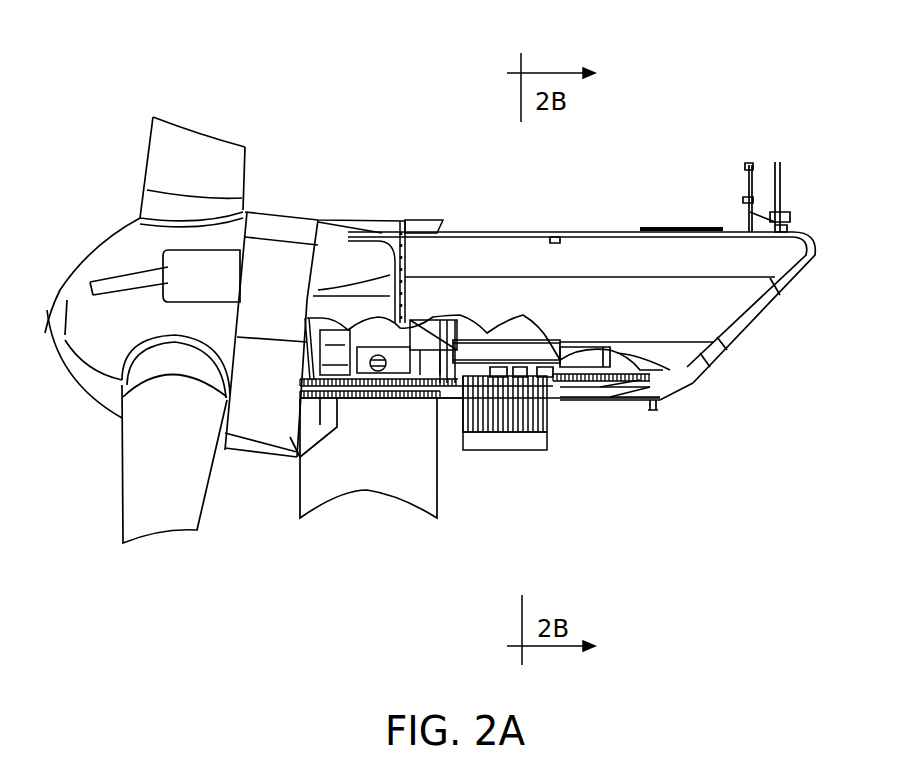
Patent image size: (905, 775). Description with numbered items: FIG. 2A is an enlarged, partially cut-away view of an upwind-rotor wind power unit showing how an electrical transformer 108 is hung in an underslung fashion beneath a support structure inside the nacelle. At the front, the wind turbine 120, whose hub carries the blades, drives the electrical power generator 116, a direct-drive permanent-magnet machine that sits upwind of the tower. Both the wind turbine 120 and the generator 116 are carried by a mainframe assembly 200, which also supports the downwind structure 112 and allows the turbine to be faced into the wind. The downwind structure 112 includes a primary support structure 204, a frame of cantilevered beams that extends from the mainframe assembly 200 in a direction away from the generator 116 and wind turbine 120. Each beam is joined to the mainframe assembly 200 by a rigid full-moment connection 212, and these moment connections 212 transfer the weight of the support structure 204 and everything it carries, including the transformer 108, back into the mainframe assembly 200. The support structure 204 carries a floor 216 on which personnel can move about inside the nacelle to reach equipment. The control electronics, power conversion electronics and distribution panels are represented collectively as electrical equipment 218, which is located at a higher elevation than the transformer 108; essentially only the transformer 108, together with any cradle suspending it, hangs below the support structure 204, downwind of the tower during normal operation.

The electrical transformer 108 is at (553, 422).
The downwind structure 112 is at (645, 230).
The electrical power generator 116 is at (290, 214).
The wind turbine 120 is at (140, 207).
The mainframe assembly 200 is at (385, 323).
The primary support structure 204 is at (693, 383).
The full-moment connection 212 is at (412, 393).
The floor 216 is at (485, 335).
The electrical equipment 218 is at (602, 353).